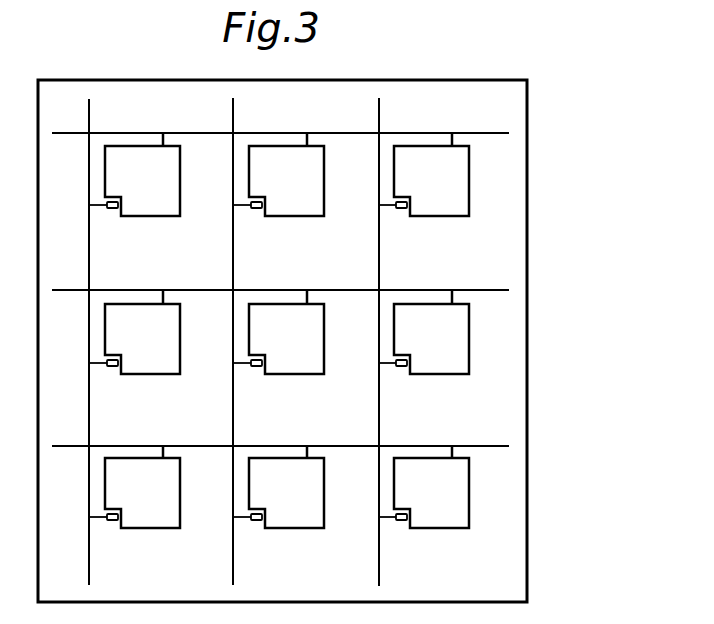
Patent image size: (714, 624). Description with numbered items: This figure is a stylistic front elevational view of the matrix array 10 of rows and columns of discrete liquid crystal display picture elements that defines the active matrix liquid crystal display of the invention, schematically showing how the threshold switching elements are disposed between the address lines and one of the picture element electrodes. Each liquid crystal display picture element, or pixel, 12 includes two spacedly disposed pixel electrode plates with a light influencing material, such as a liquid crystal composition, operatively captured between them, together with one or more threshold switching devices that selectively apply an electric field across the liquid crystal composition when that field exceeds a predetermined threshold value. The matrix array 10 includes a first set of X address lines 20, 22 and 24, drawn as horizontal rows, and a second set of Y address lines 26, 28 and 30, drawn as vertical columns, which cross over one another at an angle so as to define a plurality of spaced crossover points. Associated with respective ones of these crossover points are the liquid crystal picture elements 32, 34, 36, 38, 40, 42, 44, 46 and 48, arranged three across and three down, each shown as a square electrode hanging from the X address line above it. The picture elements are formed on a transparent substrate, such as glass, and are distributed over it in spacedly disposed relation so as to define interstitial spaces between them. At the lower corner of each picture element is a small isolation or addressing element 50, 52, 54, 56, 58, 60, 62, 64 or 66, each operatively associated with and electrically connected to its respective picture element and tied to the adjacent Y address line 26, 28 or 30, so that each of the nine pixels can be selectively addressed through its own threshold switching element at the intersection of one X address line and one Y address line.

The matrix array 10 is at (574, 76).
The liquid crystal display picture element 12 is at (493, 174).
The X address line 20 is at (497, 131).
The X address line 22 is at (498, 288).
The X address line 24 is at (495, 443).
The Y address line 26 is at (89, 114).
The Y address line 28 is at (233, 110).
The Y address line 30 is at (379, 110).
The liquid crystal picture element 32 is at (128, 181).
The liquid crystal picture element 34 is at (272, 181).
The liquid crystal picture element 36 is at (417, 181).
The liquid crystal picture element 38 is at (128, 339).
The liquid crystal picture element 40 is at (272, 339).
The liquid crystal picture element 42 is at (417, 339).
The liquid crystal picture element 44 is at (128, 494).
The liquid crystal picture element 46 is at (272, 494).
The liquid crystal picture element 48 is at (417, 494).
The isolation or addressing element 50 is at (113, 208).
The isolation or addressing element 52 is at (257, 208).
The isolation or addressing element 54 is at (402, 208).
The isolation or addressing element 56 is at (113, 366).
The isolation or addressing element 58 is at (257, 366).
The isolation or addressing element 60 is at (402, 366).
The isolation or addressing element 62 is at (113, 520).
The isolation or addressing element 64 is at (257, 520).
The isolation or addressing element 66 is at (402, 520).